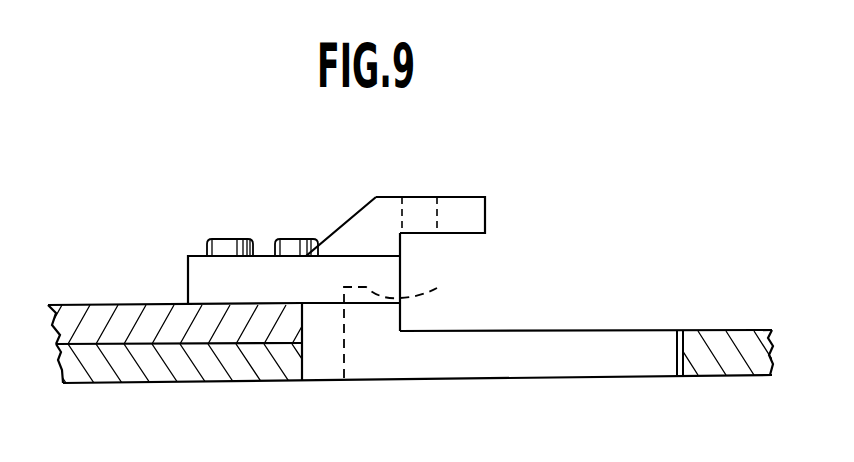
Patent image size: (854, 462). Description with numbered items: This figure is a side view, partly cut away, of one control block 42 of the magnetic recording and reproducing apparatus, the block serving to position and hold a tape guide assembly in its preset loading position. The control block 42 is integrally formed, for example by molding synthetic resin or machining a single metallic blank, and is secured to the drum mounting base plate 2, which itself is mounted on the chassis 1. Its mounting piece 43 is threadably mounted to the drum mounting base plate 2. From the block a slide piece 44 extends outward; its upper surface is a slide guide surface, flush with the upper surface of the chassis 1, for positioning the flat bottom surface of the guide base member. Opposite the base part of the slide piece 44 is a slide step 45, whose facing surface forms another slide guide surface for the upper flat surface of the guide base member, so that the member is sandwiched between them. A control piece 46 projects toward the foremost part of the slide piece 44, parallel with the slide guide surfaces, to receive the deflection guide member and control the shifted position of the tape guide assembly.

The chassis 1 is at (158, 372).
The drum mounting base plate 2 is at (126, 311).
The control block 42 is at (337, 267).
The mounting piece 43 is at (265, 268).
The slide piece 44 is at (597, 337).
The slide step 45 is at (404, 322).
The control piece 46 is at (470, 205).